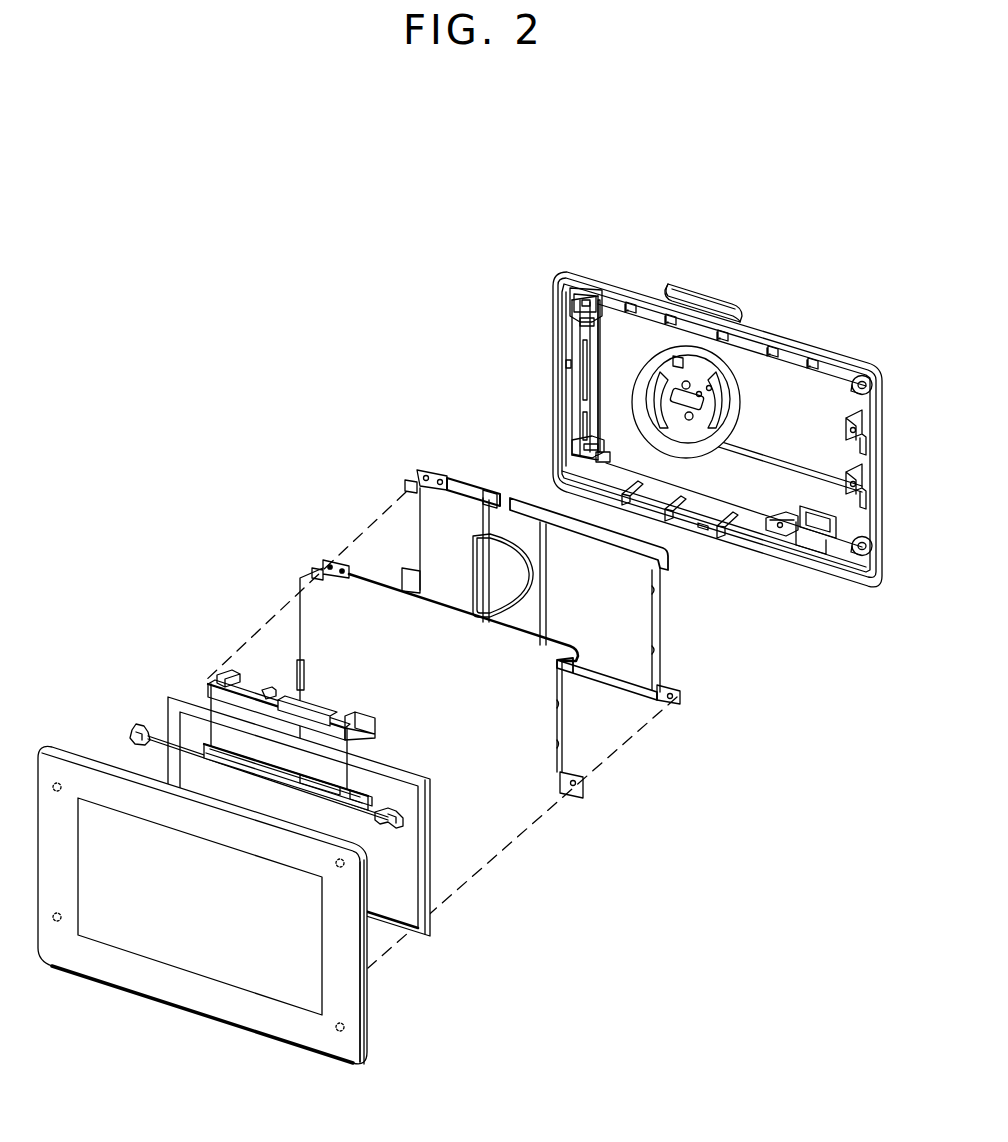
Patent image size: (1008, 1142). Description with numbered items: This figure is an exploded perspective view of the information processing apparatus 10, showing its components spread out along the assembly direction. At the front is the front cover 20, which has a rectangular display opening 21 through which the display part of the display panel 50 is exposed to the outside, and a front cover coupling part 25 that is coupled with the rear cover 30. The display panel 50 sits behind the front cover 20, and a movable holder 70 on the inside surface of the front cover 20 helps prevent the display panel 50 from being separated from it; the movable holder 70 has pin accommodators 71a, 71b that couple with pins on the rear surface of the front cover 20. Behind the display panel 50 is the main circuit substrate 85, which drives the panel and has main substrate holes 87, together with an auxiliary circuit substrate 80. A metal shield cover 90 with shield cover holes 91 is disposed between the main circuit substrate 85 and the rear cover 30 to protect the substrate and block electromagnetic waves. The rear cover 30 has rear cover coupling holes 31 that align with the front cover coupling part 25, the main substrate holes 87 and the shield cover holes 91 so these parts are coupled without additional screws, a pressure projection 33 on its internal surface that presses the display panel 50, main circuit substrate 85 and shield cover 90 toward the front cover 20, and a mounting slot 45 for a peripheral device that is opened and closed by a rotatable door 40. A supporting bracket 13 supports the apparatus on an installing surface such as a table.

The information processing apparatus 10 is at (181, 305).
The supporting bracket 13 is at (703, 290).
The front cover 20 is at (250, 1032).
The display opening 21 is at (162, 958).
The front cover coupling part 25 is at (368, 995).
The rear cover 30 is at (553, 375).
The rear cover coupling holes 31 is at (856, 374).
The pressure projection 33 is at (774, 546).
The door 40 is at (570, 338).
The mounting slot 45 is at (598, 345).
The display panel 50 is at (432, 897).
The movable holder 70 is at (150, 733).
The pin accommodator 71a is at (404, 822).
The pin accommodator 71b is at (132, 737).
The auxiliary circuit substrate 80 is at (210, 680).
The main circuit substrate 85 is at (545, 713).
The main substrate holes 87 is at (328, 565).
The shield cover 90 is at (640, 620).
The shield cover holes 91 is at (418, 478).